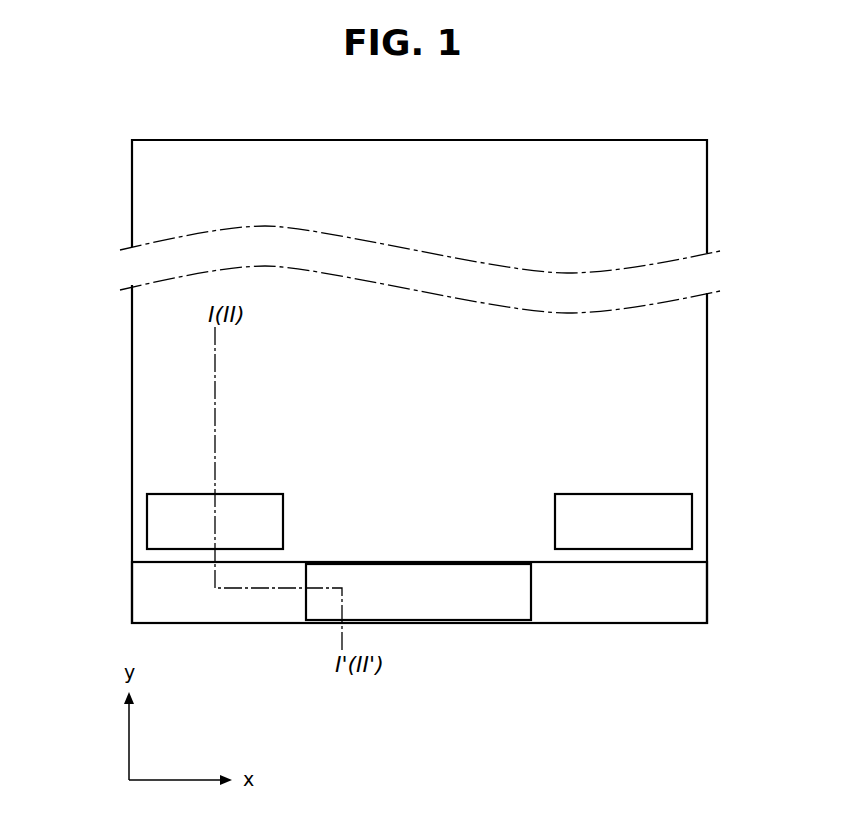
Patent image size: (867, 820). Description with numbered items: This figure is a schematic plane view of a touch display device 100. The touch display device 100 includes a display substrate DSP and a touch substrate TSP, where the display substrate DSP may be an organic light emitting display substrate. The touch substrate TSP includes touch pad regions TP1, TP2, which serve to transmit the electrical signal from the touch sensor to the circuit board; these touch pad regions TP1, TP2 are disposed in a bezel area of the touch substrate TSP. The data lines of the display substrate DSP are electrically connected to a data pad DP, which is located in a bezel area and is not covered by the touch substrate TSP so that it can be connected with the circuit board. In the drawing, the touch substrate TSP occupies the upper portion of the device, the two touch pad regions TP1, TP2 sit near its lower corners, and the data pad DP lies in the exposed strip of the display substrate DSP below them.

The touch display device 100 is at (67, 158).
The touch substrate TSP is at (690, 415).
The display substrate DSP is at (697, 591).
The touch pad region TP1 is at (170, 524).
The touch pad region TP2 is at (668, 524).
The data pad DP is at (475, 605).